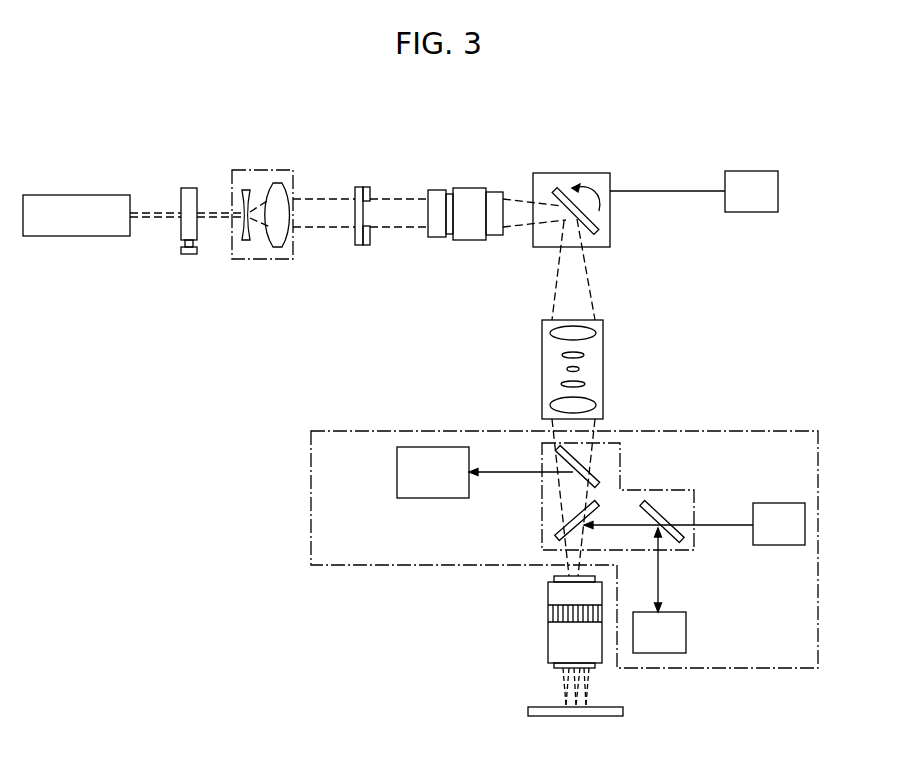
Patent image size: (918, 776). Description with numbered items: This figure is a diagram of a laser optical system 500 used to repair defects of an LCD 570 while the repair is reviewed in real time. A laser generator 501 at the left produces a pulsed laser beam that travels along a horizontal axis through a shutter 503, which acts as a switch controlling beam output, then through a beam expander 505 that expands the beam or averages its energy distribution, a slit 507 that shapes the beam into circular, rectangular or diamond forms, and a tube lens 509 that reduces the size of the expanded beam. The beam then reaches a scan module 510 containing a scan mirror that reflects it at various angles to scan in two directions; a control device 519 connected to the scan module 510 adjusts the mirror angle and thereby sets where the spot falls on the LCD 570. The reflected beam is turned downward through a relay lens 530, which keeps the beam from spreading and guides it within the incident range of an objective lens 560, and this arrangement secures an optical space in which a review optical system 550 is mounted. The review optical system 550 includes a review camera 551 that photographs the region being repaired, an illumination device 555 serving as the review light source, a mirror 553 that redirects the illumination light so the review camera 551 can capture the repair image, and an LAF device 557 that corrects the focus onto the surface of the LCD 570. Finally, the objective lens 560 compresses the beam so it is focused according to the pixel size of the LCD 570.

The laser optical system 500 is at (465, 732).
The laser generator 501 is at (79, 195).
The shutter 503 is at (189, 190).
The beam expander 505 is at (252, 170).
The slit 507 is at (359, 187).
The tube lens 509 is at (468, 188).
The scan module 510 is at (571, 173).
The control device 519 is at (778, 190).
The relay lens 530 is at (542, 364).
The review optical system 550 is at (688, 430).
The review camera 551 is at (397, 473).
The mirror 553 is at (622, 465).
The illumination device 555 is at (780, 503).
The Laser Auto Focusing (LAF) device 557 is at (686, 632).
The objective lens 560 is at (548, 643).
The LCD 570 is at (625, 711).